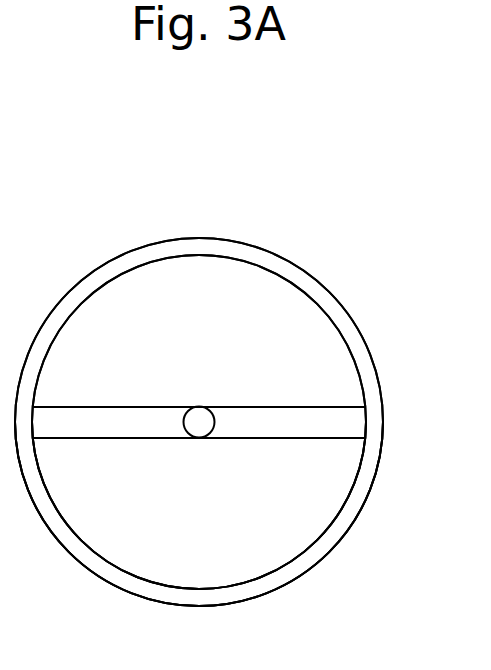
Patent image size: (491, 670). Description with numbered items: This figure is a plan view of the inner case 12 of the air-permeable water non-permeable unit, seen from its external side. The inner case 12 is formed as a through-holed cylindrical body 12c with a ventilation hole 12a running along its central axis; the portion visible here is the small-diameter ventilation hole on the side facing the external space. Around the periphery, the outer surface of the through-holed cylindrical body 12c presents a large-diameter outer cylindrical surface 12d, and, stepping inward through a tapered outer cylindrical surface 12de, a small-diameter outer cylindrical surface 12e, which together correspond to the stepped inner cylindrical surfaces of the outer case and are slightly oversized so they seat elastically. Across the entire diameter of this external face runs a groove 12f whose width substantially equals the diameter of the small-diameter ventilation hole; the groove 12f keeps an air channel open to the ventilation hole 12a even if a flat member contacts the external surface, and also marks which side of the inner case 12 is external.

The inner case 12 is at (103, 178).
The ventilation hole 12a is at (207, 422).
The through-holed cylindrical body 12c is at (110, 298).
The large-diameter outer cylindrical surface 12d is at (262, 248).
The small-diameter outer cylindrical surface 12e is at (302, 288).
The tapered outer cylindrical surface 12de is at (325, 547).
The groove 12f is at (287, 418).